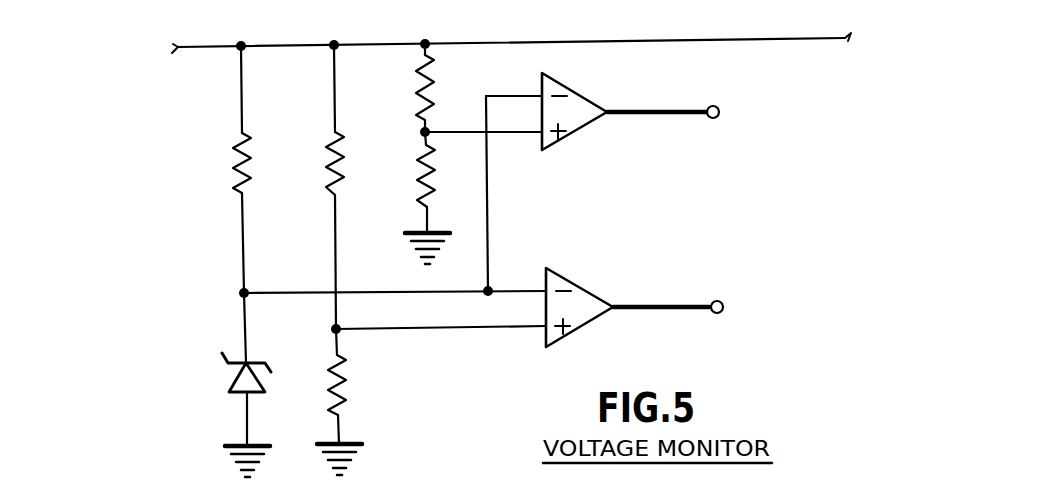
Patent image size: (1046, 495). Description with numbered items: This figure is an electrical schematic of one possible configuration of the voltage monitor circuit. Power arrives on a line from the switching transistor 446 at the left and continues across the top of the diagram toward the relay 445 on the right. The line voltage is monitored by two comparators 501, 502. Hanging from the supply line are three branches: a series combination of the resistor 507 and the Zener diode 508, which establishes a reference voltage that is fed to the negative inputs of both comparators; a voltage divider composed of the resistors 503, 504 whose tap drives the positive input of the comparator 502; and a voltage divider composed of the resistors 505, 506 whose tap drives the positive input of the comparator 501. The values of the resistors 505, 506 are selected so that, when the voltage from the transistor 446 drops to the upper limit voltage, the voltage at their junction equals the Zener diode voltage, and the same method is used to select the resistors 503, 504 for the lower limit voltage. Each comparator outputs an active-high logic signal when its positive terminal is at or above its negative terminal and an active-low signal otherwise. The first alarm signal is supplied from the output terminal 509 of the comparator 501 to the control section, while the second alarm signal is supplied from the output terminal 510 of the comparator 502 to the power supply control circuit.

The comparator 501 is at (580, 103).
The comparator 502 is at (584, 287).
The resistor 503 is at (328, 166).
The resistor 504 is at (347, 390).
The resistor 505 is at (418, 100).
The resistor 506 is at (420, 186).
The resistor 507 is at (236, 150).
The Zener diode 508 is at (236, 373).
The output terminal 509 is at (688, 111).
The output terminal 510 is at (693, 307).
The switching transistor 446 is at (109, 47).
The relay 445 is at (893, 40).